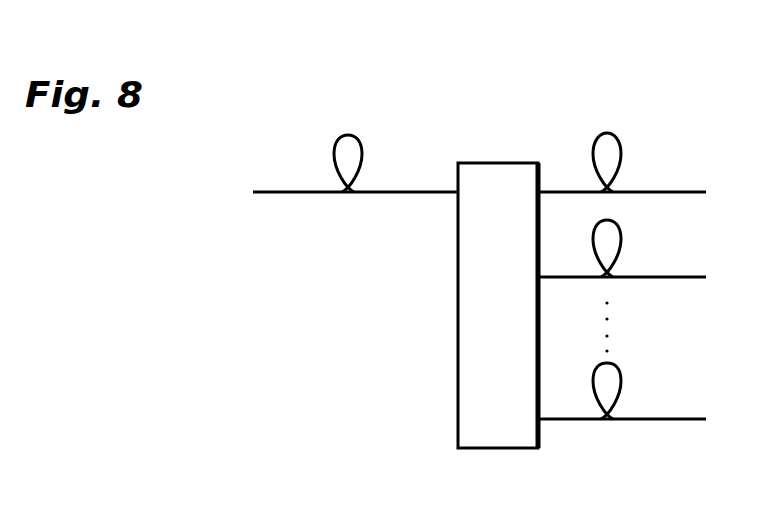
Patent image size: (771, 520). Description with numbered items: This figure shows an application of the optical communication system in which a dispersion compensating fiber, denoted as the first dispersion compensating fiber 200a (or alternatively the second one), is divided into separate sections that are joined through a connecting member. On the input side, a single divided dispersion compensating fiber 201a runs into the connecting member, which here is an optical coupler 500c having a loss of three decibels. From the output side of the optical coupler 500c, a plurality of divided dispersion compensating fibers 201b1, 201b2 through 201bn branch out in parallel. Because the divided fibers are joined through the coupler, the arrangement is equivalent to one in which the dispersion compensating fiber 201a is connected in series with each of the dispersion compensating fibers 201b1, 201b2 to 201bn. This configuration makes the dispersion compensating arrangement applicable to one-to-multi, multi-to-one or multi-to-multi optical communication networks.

The first dispersion compensating fiber 200a is at (705, 70).
The divided dispersion compensating fiber 201a is at (366, 152).
The optical coupler 500c is at (505, 163).
The divided dispersion compensating fiber 201b1 is at (623, 153).
The divided dispersion compensating fiber 201b2 is at (623, 252).
The divided dispersion compensating fiber 201bn is at (623, 386).